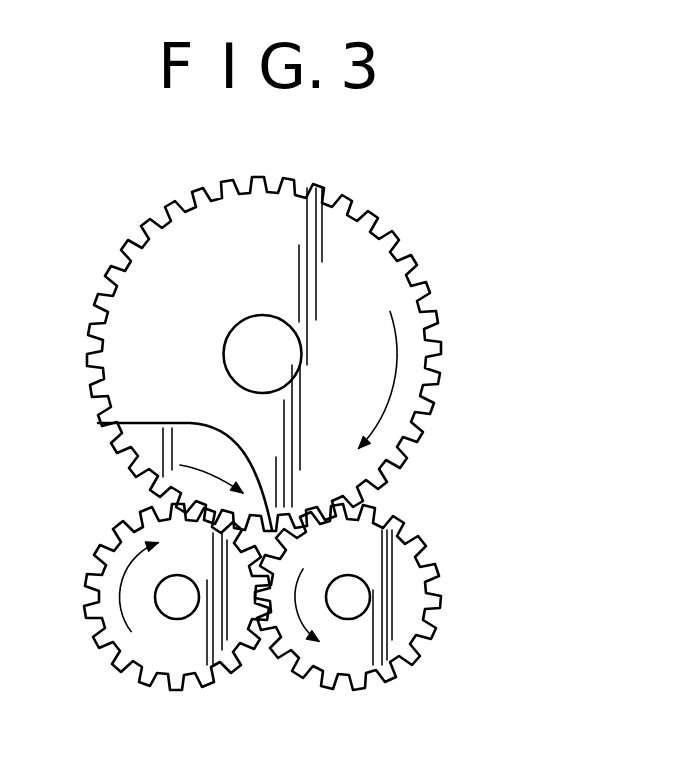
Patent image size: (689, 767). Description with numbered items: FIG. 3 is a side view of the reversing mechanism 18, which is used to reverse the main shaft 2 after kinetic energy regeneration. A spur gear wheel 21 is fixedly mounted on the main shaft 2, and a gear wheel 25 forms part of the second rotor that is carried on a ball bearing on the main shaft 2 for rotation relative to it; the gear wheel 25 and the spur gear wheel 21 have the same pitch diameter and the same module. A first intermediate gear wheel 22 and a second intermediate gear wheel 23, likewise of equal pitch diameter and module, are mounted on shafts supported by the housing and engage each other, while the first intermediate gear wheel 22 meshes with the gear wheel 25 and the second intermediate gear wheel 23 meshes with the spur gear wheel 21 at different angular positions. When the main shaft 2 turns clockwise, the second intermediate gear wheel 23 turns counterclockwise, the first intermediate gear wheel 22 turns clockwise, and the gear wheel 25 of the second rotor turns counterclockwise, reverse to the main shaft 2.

The main shaft 2 is at (237, 352).
The reversing mechanism 18 is at (507, 597).
The spur gear wheel 21 is at (423, 320).
The first intermediate gear wheel 22 is at (117, 660).
The second intermediate gear wheel 23 is at (413, 662).
The gear wheel 25 is at (143, 475).